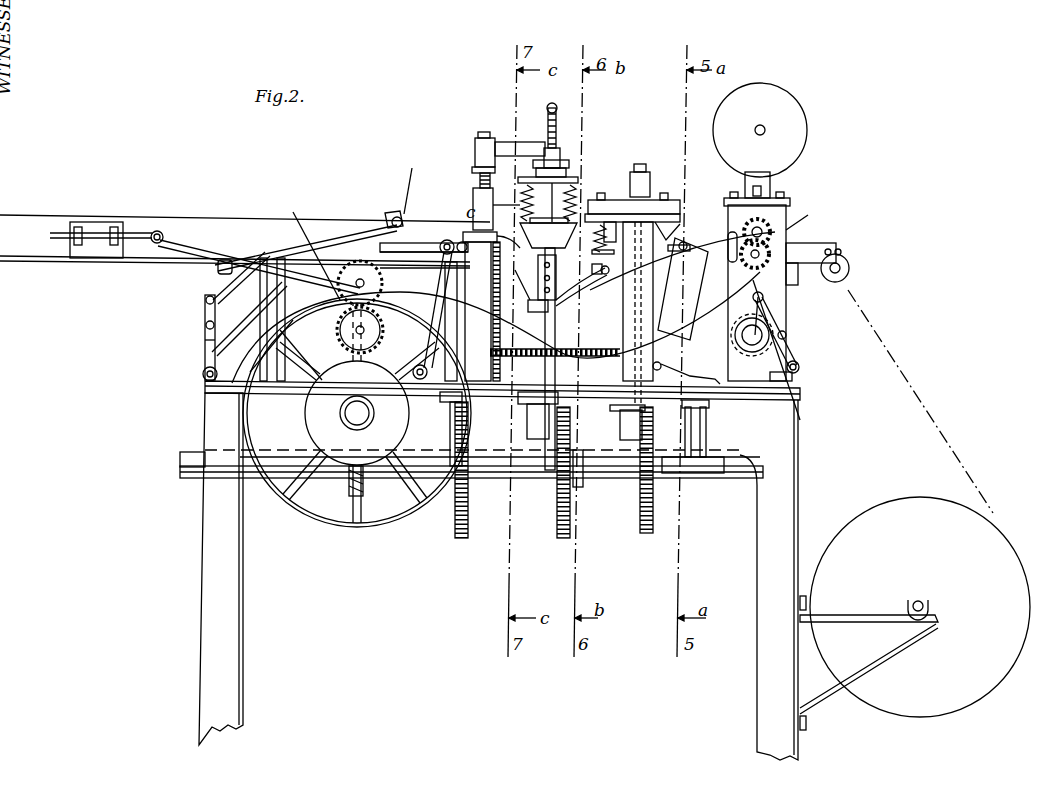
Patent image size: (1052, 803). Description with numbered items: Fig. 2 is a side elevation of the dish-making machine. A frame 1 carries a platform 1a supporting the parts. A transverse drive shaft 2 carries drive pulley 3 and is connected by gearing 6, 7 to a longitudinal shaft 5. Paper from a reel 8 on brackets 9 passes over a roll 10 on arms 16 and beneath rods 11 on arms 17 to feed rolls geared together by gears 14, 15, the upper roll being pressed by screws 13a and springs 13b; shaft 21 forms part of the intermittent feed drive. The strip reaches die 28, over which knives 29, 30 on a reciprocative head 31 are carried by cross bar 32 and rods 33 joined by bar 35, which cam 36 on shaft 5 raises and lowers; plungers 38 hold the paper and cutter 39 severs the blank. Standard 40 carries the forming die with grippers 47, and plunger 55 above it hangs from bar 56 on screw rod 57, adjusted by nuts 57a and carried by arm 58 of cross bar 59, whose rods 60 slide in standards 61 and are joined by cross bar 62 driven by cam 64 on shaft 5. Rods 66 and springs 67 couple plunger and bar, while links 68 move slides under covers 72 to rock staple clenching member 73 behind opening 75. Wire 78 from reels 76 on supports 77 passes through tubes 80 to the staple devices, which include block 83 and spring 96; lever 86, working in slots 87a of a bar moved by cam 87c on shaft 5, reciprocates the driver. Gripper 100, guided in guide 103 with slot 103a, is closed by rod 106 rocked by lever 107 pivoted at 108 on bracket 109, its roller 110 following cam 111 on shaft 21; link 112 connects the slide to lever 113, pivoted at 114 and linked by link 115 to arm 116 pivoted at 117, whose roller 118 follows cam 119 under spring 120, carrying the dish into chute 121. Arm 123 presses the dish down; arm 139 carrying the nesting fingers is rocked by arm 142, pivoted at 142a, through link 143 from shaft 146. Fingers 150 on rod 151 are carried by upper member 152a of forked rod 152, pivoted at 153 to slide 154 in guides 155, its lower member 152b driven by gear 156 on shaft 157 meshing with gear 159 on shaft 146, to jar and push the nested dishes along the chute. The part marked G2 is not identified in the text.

The frame 1 is at (214, 528).
The platform or plate 1a is at (782, 392).
The drive shaft 2 is at (364, 414).
The drive pulley 3 is at (355, 527).
The shaft 5 is at (194, 458).
The gearing 6 is at (363, 485).
The gearing 7 is at (370, 422).
The reel of paper 8 is at (920, 607).
The brackets 9 is at (840, 622).
The roll 10 is at (850, 268).
The rods or wires 11 is at (843, 252).
The adjustable screws 13a is at (782, 200).
The springs 13b is at (786, 210).
The gear 14 is at (768, 250).
The gear 15 is at (770, 230).
The arms 16 is at (804, 280).
The arms 17 is at (835, 244).
The shaft 21 is at (780, 322).
The die 28 is at (690, 248).
The cutting and scoring knives 29 is at (682, 235).
The cutting and scoring knife 30 is at (614, 252).
The reciprocative head or block 31 is at (680, 207).
The cross bar 32 is at (651, 185).
The reciprocative rods 33 is at (612, 408).
The bar 35 is at (620, 432).
The cam 36 is at (630, 470).
The spring actuated plungers 38 is at (637, 301).
The cutter or knife 39 is at (608, 222).
The standard 40 is at (555, 346).
The grippers 47 is at (522, 283).
The plunger 55 is at (548, 235).
The bar 56 is at (562, 162).
The adjustable screw rod 57 is at (557, 128).
The nuts 57a is at (547, 108).
The arm 58 is at (505, 142).
The cross bar 59 is at (478, 140).
The reciprocative rods 60 is at (480, 172).
The standards 61 is at (478, 311).
The cross bar 62 is at (522, 424).
The cam 64 is at (468, 522).
The rods 66 is at (575, 178).
The springs 67 is at (474, 200).
The links 68 is at (568, 200).
The covers 72 is at (505, 209).
The staple clenching member 73 is at (590, 300).
The opening 75 is at (480, 249).
The reels 76 is at (770, 92).
The supports 77 is at (757, 173).
The wires 78 is at (790, 170).
The tubes 80 is at (682, 261).
The block 83 is at (608, 280).
The lever 86 is at (525, 404).
The slots 87a is at (556, 478).
The cam 87c is at (556, 538).
The spring 96 is at (545, 277).
The gripper 100 is at (515, 251).
The guide 103 is at (418, 242).
The slot 103a is at (424, 256).
The rod 106 is at (481, 311).
The lever 107 is at (450, 424).
The pivot 108 is at (665, 364).
The bracket 109 is at (706, 398).
The roller 110 is at (800, 367).
The cam 111 is at (770, 345).
The link 112 is at (449, 240).
The lever 113 is at (438, 272).
The pivot 114 is at (445, 405).
The link 115 is at (536, 312).
The arm 116 is at (772, 315).
The pivot 117 is at (796, 380).
The pin or roller 118 is at (787, 335).
The cam 119 is at (800, 422).
The spring 120 is at (544, 330).
The chute or receptacle 121 is at (245, 240).
The arm 123 is at (226, 273).
The arm 139 is at (210, 312).
The arm 142 is at (206, 340).
The pivot 142a is at (204, 377).
The link 143 is at (240, 335).
The shaft 146 is at (356, 330).
The fingers 150 is at (395, 212).
The rod 151 is at (416, 191).
The forked rod 152 is at (186, 235).
The upper member 152a is at (300, 245).
The lower member 152b is at (236, 292).
The pivot 153 is at (157, 230).
The slide 154 is at (108, 246).
The guides 155 is at (76, 226).
The gear 156 is at (380, 290).
The shaft 157 is at (300, 226).
The gear 159 is at (366, 331).
The lever G2 is at (687, 289).